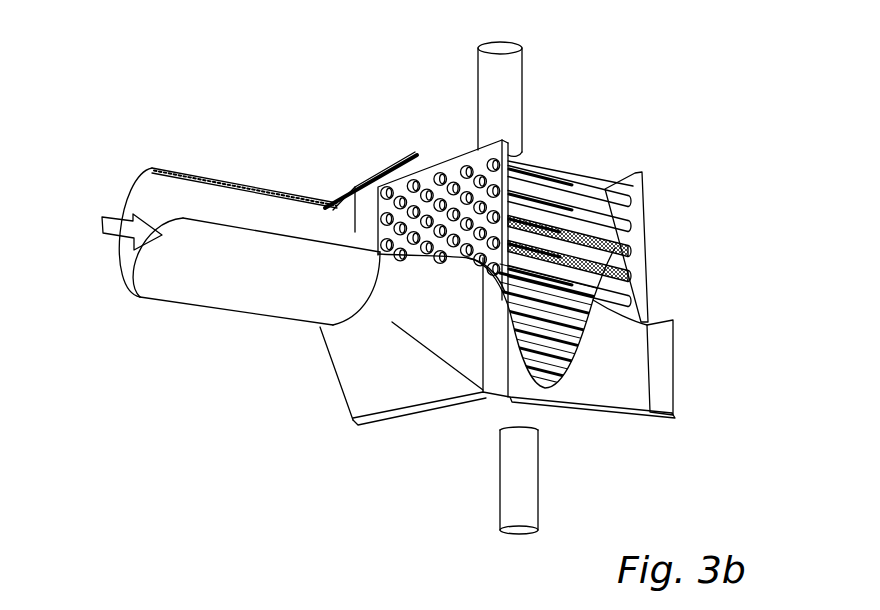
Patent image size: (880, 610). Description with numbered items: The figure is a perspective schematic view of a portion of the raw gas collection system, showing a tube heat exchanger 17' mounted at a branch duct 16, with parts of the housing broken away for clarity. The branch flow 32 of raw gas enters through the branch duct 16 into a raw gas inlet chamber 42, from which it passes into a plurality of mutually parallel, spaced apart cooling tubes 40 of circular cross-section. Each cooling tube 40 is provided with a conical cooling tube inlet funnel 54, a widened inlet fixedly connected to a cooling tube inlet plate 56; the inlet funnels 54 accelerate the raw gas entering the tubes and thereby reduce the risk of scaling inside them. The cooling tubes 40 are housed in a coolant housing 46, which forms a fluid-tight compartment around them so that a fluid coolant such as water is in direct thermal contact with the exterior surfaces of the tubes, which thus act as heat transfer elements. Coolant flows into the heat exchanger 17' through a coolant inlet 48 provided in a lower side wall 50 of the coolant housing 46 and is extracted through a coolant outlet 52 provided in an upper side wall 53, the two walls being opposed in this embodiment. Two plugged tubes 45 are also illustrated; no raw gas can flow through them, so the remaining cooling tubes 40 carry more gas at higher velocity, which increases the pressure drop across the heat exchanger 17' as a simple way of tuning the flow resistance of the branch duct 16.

The branch duct 16 is at (252, 182).
The branch flow 32 is at (110, 236).
The cooling tube inlet plate 56 is at (405, 158).
The raw gas inlet chamber 42 is at (443, 197).
The upper side wall 53 is at (430, 163).
The cooling tube inlet funnel 54 is at (466, 260).
The coolant outlet 52 is at (487, 70).
The coolant inlet 48 is at (520, 532).
The coolant housing 46 is at (467, 430).
The lower side wall 50 is at (601, 415).
The tube heat exchanger 17' is at (578, 202).
The cooling tube 40 is at (603, 187).
The plugged tube 45 is at (632, 250).